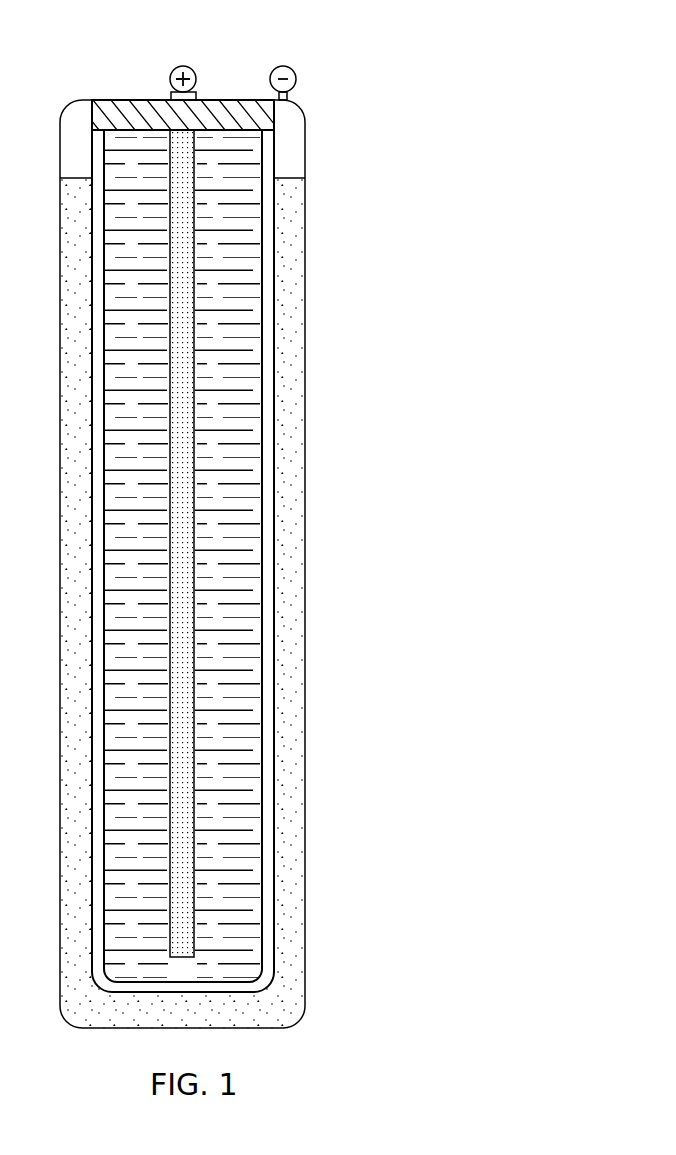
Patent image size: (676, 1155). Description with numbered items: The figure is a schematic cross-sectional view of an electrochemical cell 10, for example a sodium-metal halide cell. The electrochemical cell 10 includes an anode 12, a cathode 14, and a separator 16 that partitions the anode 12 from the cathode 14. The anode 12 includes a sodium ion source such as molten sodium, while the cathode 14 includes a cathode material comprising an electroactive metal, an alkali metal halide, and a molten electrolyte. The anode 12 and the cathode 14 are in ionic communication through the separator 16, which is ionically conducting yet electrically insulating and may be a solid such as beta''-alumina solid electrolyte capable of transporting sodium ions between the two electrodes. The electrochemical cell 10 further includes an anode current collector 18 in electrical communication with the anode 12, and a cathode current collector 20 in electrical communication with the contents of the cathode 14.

The electrochemical cell 10 is at (427, 47).
The anode 12 is at (295, 797).
The cathode 14 is at (243, 680).
The separator 16 is at (265, 743).
The anode current collector 18 is at (307, 848).
The cathode current collector 20 is at (183, 612).